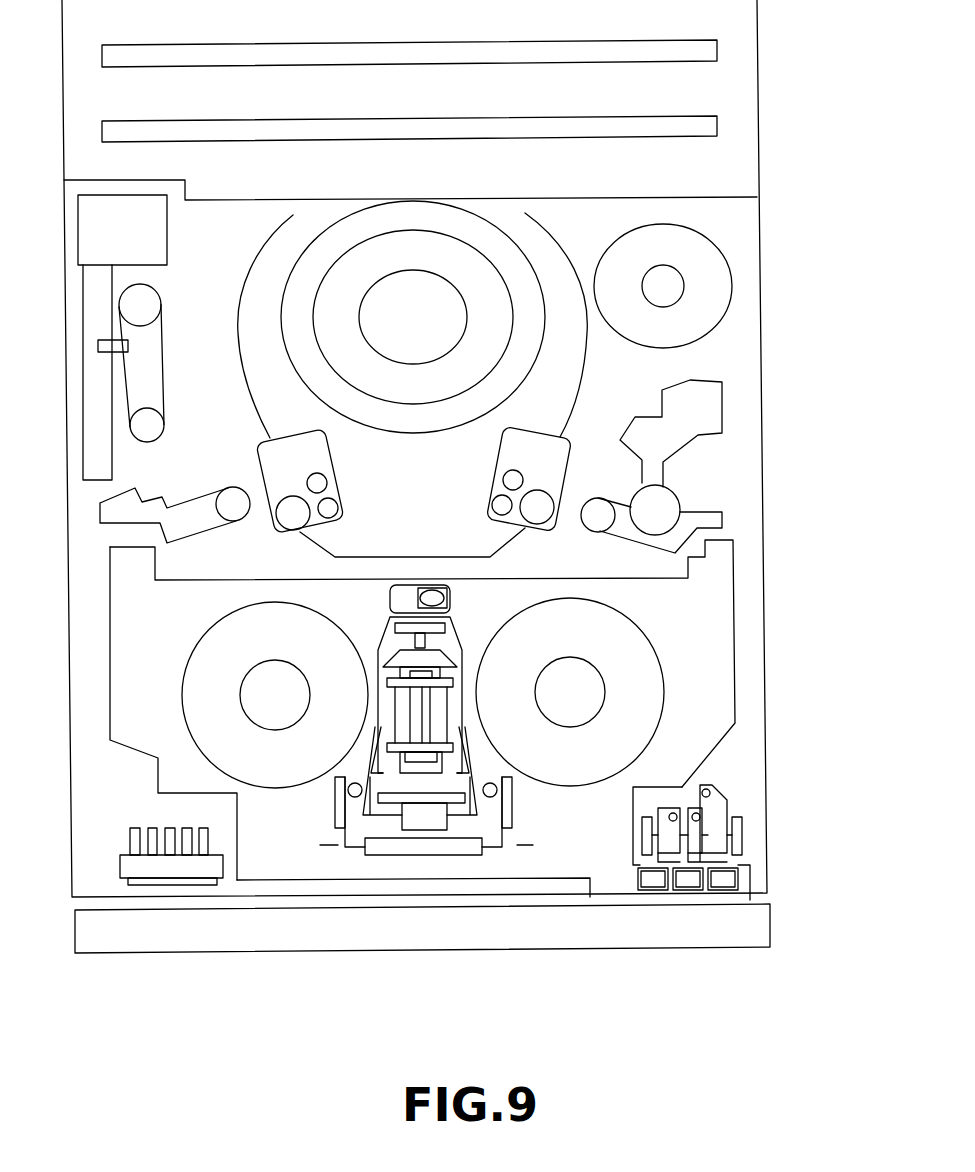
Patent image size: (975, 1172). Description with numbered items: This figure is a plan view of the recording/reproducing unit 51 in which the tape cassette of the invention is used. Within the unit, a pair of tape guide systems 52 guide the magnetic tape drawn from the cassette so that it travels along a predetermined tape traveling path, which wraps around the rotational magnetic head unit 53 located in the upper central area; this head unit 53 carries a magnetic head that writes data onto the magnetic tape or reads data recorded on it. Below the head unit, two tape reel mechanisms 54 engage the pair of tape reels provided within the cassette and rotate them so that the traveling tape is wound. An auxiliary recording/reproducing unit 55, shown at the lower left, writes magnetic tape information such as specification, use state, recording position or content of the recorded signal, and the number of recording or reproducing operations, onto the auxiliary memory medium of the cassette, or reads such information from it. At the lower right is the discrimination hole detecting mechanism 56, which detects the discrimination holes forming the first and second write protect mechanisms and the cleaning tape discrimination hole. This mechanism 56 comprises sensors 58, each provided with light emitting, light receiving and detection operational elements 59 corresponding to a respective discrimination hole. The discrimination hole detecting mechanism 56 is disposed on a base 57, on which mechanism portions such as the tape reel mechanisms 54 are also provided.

The recording/reproducing unit 51 is at (780, 370).
The tape guide systems 52 is at (243, 458).
The rotational magnetic head unit 53 is at (330, 228).
The tape reel mechanisms 54 is at (202, 645).
The auxiliary recording/reproducing unit 55 is at (170, 877).
The discrimination hole detecting mechanism 56 is at (745, 767).
The base 57 is at (547, 870).
The sensors 58 is at (642, 900).
The light emitting, light receiving and detection operational elements 59 is at (660, 810).